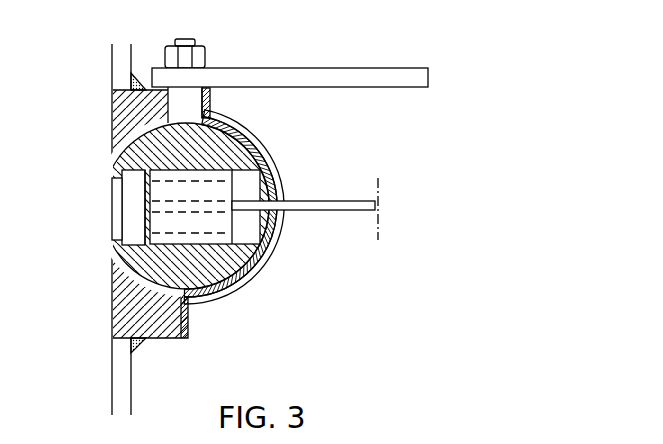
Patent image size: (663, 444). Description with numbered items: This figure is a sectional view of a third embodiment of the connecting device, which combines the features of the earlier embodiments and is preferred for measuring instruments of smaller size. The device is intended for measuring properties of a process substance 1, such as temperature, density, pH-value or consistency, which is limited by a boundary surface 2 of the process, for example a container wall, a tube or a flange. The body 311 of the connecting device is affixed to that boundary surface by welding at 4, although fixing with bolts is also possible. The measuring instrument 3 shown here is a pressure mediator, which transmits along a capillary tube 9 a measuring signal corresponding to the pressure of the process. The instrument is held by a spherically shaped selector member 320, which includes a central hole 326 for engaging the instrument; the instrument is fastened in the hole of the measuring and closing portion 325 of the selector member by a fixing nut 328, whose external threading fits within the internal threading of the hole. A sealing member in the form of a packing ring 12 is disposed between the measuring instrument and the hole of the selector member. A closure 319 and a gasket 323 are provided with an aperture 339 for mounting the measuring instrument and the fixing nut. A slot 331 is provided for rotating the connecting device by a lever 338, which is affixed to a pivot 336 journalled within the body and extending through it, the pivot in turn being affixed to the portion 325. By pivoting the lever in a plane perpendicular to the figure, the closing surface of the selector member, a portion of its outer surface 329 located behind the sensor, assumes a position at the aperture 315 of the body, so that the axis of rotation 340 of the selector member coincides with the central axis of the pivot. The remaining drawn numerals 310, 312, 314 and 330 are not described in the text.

The process substance 1 is at (49, 365).
The boundary surface 2 is at (122, 397).
The measuring instrument 3 is at (128, 198).
The welding 4 is at (142, 347).
The capillary tube 9 is at (372, 204).
The packing ring 12 is at (113, 177).
The ball joint assembly 310 is at (505, 240).
The body 311 is at (147, 52).
The upper housing 312 is at (120, 124).
The upper seat 314 is at (118, 153).
The aperture 315 is at (112, 252).
The closure 319 is at (240, 282).
The selector member 320 is at (224, 152).
The gasket 323 is at (270, 258).
The measuring and closing portion 325 is at (226, 300).
The central hole 326 is at (263, 240).
The fixing nut 328 is at (247, 224).
The outer surface 329 is at (150, 122).
The lower housing 330 is at (178, 296).
The slot 331 is at (282, 214).
The pivot 336 is at (190, 101).
The lever 338 is at (381, 70).
The aperture 339 is at (277, 178).
The axis of rotation 340 is at (207, 124).